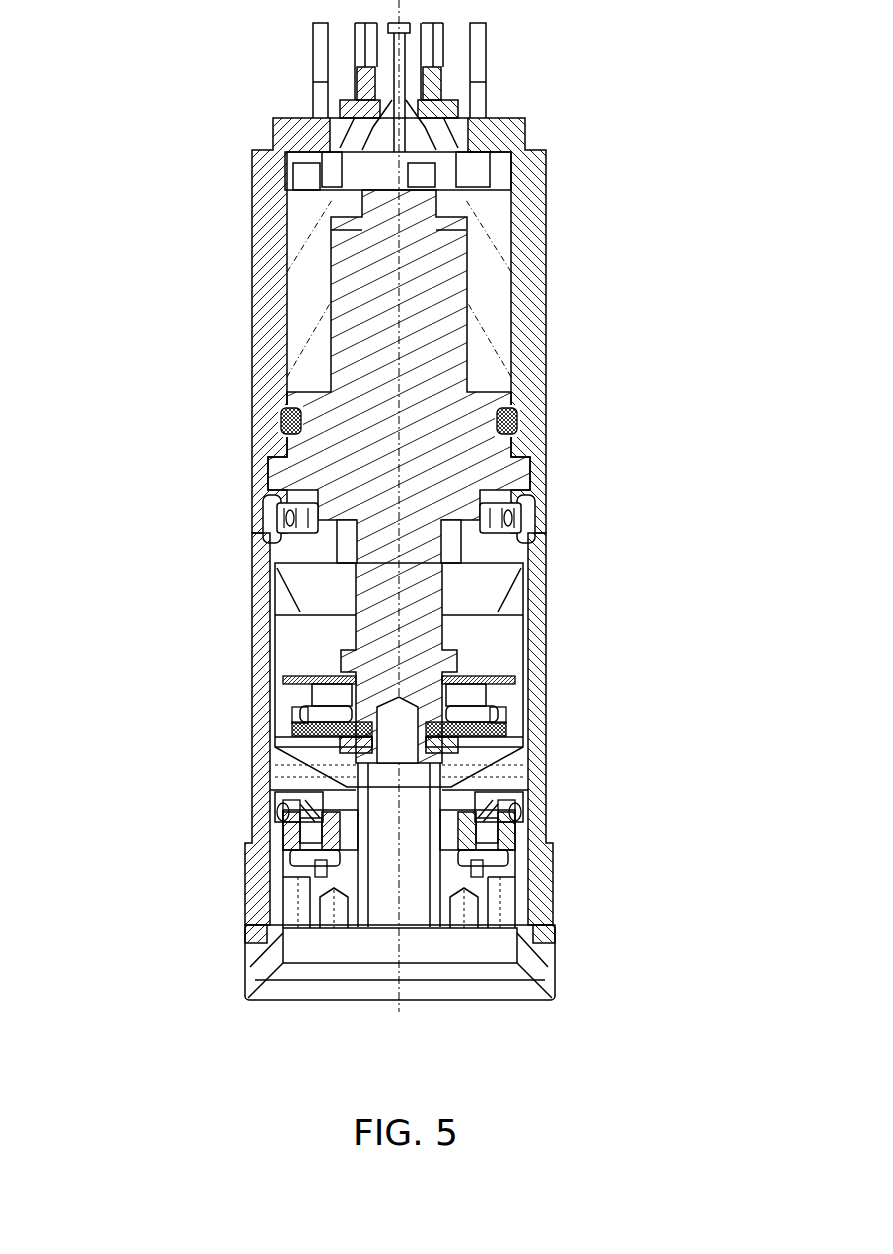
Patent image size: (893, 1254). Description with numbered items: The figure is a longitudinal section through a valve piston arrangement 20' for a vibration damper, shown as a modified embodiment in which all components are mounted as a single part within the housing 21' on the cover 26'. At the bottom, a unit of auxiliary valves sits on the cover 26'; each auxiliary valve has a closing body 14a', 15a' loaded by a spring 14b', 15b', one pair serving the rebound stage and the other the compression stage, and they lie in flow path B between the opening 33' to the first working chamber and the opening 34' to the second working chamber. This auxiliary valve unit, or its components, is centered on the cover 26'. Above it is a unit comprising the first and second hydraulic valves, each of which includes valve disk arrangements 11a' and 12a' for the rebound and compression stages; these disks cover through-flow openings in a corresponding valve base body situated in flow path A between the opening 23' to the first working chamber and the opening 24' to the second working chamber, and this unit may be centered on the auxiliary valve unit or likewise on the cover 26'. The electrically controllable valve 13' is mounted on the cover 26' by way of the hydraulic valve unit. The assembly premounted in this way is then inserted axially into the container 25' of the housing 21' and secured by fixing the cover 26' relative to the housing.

The valve piston arrangement 20' is at (508, 506).
The housing 21' is at (307, 325).
The container 25' is at (294, 389).
The opening to the first working chamber 23' is at (301, 490).
The electrically controllable valve 13' is at (500, 476).
The valve disk arrangement 12a' is at (292, 650).
The valve disk arrangement 11a' is at (520, 656).
The opening to the first working chamber 33' is at (310, 729).
The spring 15b' is at (612, 770).
The closing body 15a' is at (512, 815).
The closing body 14a' is at (292, 849).
The spring 14b' is at (289, 892).
The opening to the second working chamber 34' is at (291, 940).
The opening to the second working chamber 24' is at (545, 849).
The cover 26' is at (488, 978).